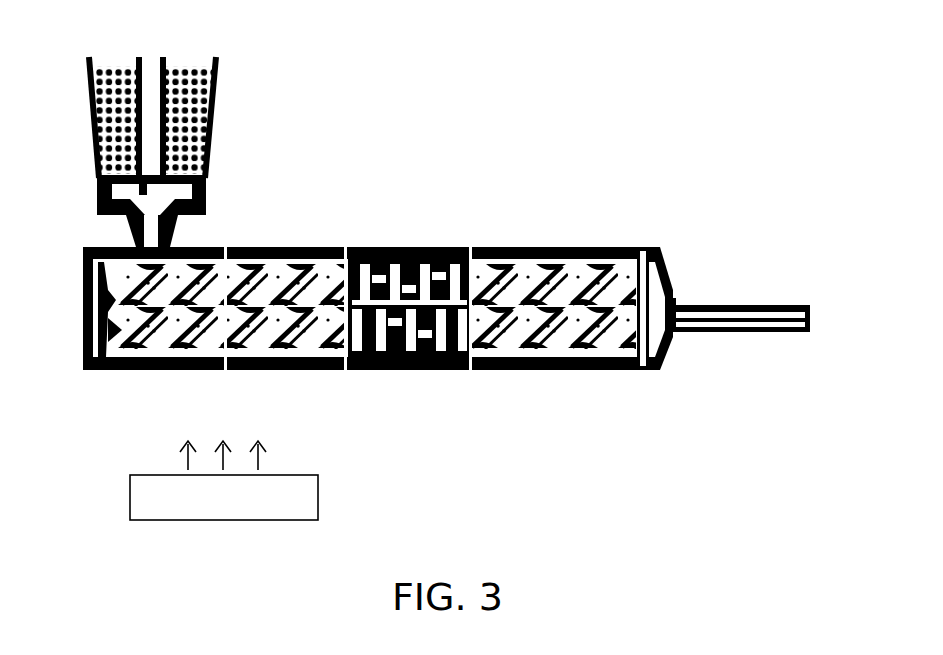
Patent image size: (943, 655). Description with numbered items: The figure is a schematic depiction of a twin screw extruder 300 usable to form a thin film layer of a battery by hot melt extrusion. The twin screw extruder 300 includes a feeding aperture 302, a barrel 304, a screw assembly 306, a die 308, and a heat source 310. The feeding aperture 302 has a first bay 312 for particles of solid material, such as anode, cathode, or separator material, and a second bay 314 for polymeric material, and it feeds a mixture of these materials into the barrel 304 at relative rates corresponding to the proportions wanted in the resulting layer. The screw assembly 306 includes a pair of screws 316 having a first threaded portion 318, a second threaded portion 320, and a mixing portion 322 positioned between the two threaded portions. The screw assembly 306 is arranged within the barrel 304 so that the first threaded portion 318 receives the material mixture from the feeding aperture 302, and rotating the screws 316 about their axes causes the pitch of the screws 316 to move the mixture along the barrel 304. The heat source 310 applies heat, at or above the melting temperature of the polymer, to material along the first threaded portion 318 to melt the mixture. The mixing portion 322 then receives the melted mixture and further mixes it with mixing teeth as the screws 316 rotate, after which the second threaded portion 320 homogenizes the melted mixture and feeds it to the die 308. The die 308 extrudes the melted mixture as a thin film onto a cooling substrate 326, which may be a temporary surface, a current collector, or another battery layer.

The twin screw extruder 300 is at (100, 31).
The feeding aperture 302 is at (205, 206).
The barrel 304 is at (392, 247).
The screw assembly 306 is at (93, 335).
The die 308 is at (660, 266).
The heat source 310 is at (318, 478).
The first bay 312 is at (215, 101).
The second bay 314 is at (95, 117).
The screws 316 is at (598, 332).
The first threaded portion 318 is at (328, 382).
The second threaded portion 320 is at (638, 382).
The mixing portion 322 is at (470, 382).
The cooling substrate 326 is at (722, 330).